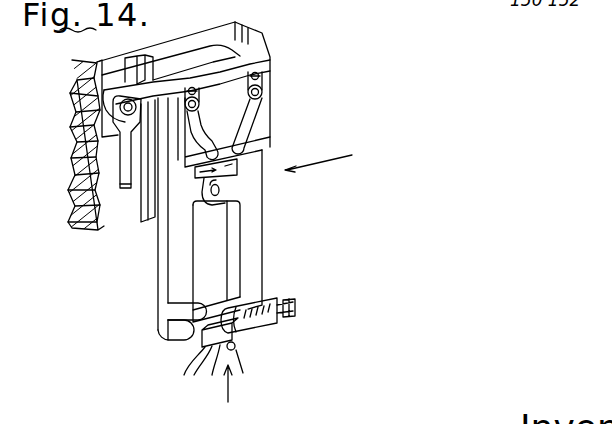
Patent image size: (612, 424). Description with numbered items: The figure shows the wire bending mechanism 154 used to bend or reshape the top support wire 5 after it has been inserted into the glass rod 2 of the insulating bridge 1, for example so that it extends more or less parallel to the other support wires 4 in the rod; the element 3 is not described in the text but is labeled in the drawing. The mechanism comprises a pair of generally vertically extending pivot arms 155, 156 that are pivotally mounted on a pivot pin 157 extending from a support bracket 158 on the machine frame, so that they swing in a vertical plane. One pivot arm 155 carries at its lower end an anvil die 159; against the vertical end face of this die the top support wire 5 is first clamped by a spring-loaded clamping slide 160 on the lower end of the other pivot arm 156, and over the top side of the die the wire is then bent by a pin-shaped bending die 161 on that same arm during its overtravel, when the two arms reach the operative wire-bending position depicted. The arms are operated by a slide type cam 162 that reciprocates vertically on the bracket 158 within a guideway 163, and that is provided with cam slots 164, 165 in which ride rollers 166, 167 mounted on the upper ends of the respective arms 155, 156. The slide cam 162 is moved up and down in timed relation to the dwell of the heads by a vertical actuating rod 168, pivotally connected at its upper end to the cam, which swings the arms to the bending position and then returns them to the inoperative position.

The insulating bridge 1 is at (230, 393).
The glass rod 2 is at (212, 370).
The lead wire 3 is at (243, 373).
The support wires 4 is at (194, 371).
The top support wire 5 is at (183, 333).
The wire bending mechanism 154 is at (336, 159).
The pivot arm 155 is at (170, 257).
The pivot arm 156 is at (258, 228).
The pivot pin 157 is at (222, 190).
The support bracket 158 is at (102, 230).
The anvil die 159 is at (236, 347).
The spring-loaded clamping slide 160 is at (238, 334).
The pin-shaped bending die 161 is at (197, 303).
The slide type cam 162 is at (275, 103).
The guideway 163 is at (232, 33).
The cam slot 164 is at (255, 146).
The cam slot 165 is at (262, 124).
The roller 166 is at (274, 59).
The roller 167 is at (263, 79).
The vertical actuating rod 168 is at (119, 172).